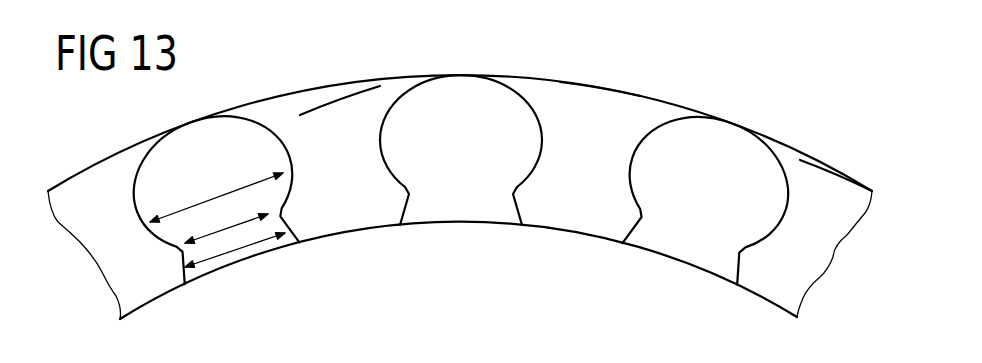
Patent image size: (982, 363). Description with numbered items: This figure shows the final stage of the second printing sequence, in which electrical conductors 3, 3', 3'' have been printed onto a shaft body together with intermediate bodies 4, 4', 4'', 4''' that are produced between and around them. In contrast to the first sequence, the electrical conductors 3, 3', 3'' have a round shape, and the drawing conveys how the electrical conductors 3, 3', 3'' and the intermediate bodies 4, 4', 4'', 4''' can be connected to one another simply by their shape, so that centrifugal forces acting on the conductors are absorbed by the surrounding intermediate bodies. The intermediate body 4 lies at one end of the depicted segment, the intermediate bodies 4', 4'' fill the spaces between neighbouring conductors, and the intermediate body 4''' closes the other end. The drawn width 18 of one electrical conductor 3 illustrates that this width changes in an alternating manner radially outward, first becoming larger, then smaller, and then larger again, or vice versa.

The electrical conductor 3 is at (217, 168).
The electrical conductor 3' is at (461, 112).
The electrical conductor 3'' is at (706, 173).
The intermediate body 4 is at (460, 197).
The intermediate body 4' is at (340, 61).
The intermediate body 4'' is at (600, 63).
The intermediate body 4''' is at (847, 147).
The width 18 is at (225, 194).